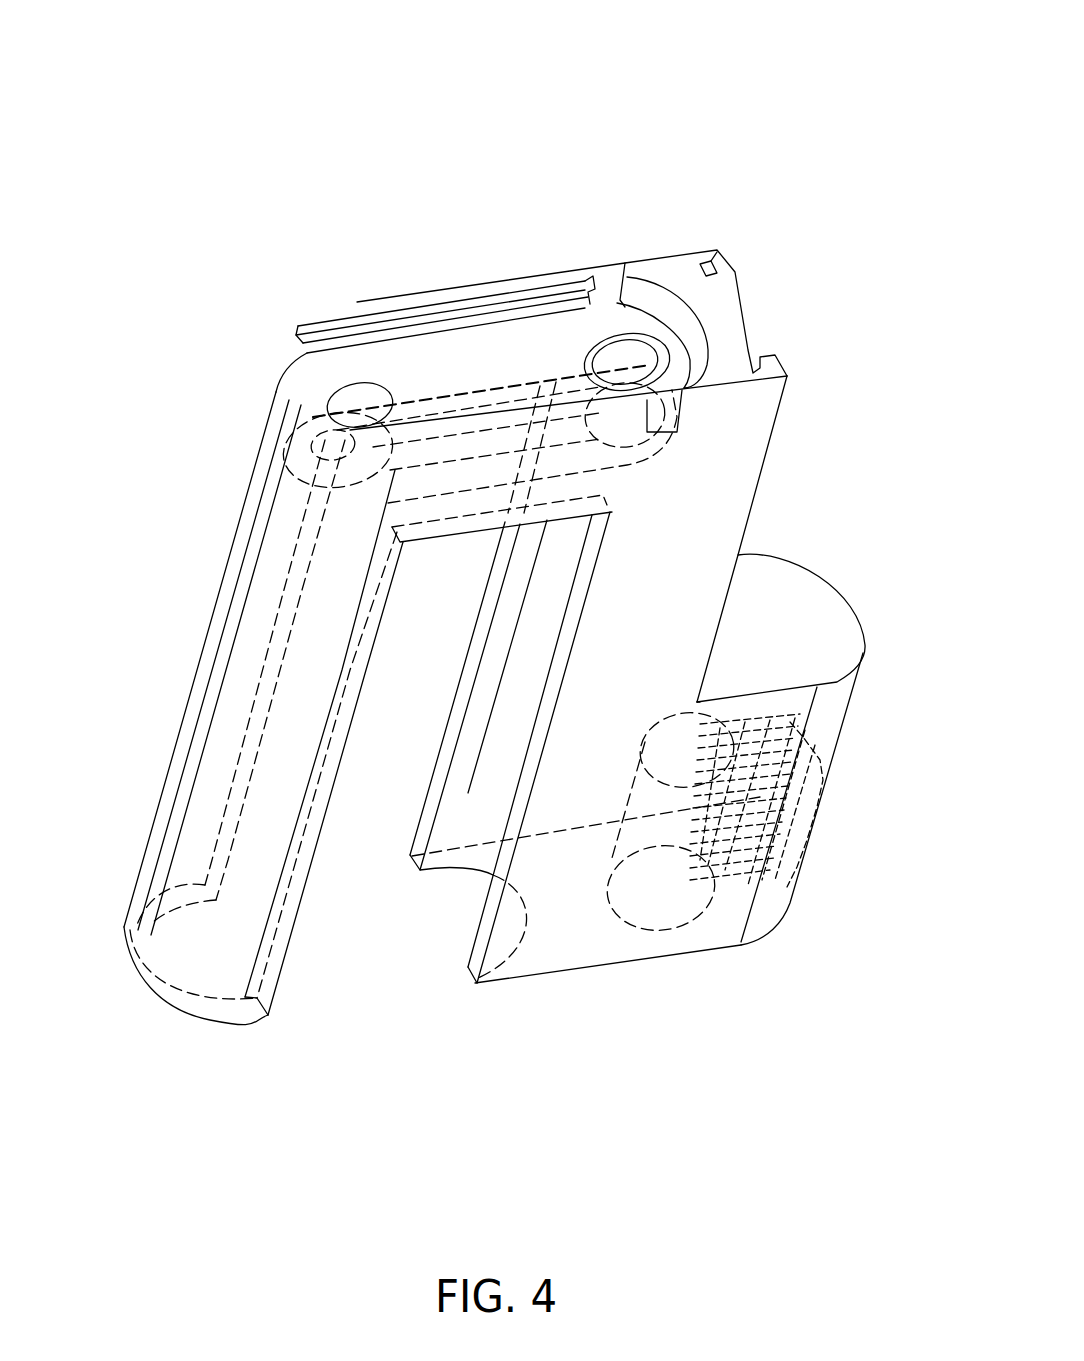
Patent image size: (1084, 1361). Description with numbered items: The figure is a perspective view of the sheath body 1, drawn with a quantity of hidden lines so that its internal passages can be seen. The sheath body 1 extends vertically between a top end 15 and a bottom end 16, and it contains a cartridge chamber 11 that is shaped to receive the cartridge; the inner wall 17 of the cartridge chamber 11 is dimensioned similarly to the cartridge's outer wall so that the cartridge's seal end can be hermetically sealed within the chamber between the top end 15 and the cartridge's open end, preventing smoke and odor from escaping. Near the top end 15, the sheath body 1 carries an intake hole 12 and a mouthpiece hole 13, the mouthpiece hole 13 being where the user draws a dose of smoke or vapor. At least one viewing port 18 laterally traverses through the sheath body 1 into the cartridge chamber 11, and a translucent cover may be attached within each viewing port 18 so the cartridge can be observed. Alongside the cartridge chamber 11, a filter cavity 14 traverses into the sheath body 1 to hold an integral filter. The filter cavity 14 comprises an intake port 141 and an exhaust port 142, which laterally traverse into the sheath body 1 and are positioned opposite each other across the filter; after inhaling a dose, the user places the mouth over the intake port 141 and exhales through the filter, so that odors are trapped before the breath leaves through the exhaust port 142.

The sheath body 1 is at (213, 180).
The cartridge chamber 11 is at (371, 1022).
The intake hole 12 is at (623, 355).
The mouthpiece hole 13 is at (368, 402).
The filter cavity 14 is at (643, 800).
The intake port 141 is at (817, 812).
The exhaust port 142 is at (655, 887).
The top end 15 is at (210, 394).
The bottom end 16 is at (203, 1041).
The inner wall 17 is at (523, 667).
The viewing port 18 is at (492, 575).